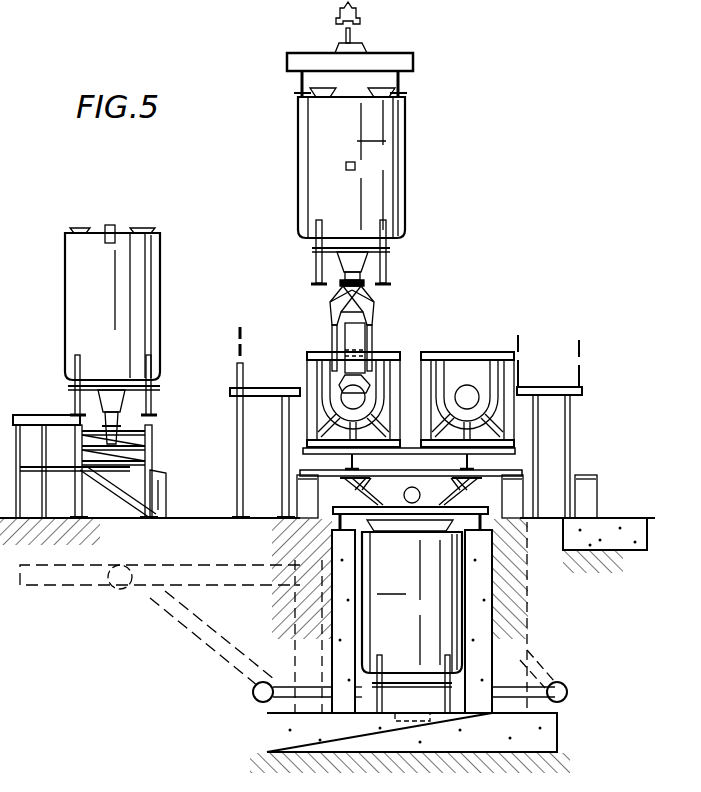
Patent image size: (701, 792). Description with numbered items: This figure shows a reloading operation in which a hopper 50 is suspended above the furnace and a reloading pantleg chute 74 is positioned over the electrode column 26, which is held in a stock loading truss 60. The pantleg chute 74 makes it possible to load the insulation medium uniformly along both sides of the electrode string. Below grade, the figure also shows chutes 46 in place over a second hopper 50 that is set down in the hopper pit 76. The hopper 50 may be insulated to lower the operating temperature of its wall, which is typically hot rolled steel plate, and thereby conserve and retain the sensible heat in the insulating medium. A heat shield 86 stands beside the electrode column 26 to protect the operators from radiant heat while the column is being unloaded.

The hopper 50 is at (387, 361).
The reloading pantleg chute 74 is at (371, 307).
The stock loading truss 60 is at (334, 325).
The electrode column 26 is at (352, 398).
The chutes 46 is at (447, 483).
The heat shield 86 is at (287, 414).
The hopper pit 76 is at (370, 714).